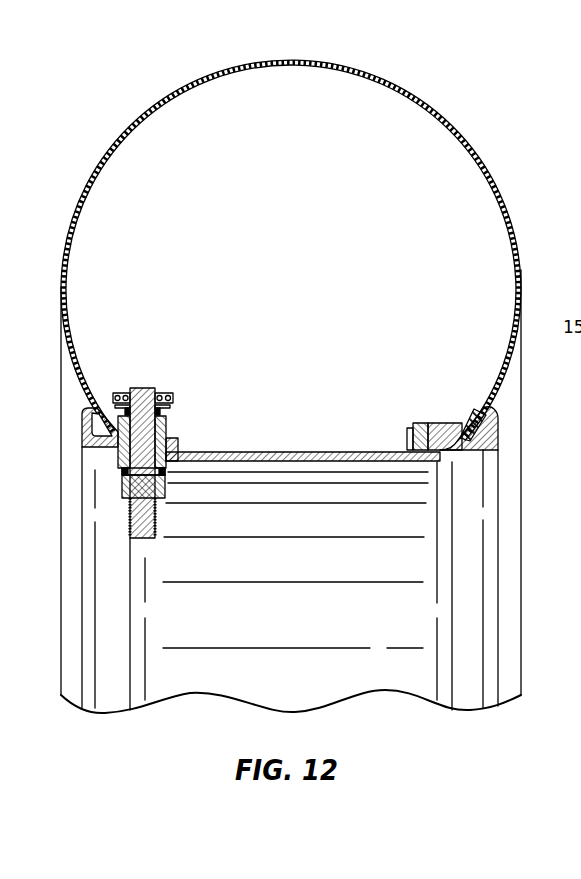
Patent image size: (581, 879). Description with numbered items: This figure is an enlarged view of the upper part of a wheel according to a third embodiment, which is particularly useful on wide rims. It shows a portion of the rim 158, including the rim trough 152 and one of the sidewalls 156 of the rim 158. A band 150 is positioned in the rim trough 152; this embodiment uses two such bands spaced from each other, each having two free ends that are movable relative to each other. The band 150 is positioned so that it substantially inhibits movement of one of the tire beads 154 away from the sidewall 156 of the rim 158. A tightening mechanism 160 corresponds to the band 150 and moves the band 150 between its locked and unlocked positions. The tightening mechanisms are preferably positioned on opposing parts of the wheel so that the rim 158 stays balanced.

The band 150 is at (437, 422).
The rim trough 152 is at (296, 432).
The tire bead 154 is at (472, 418).
The sidewall 156 is at (498, 426).
The rim 158 is at (365, 517).
The tightening mechanism 160 is at (154, 372).